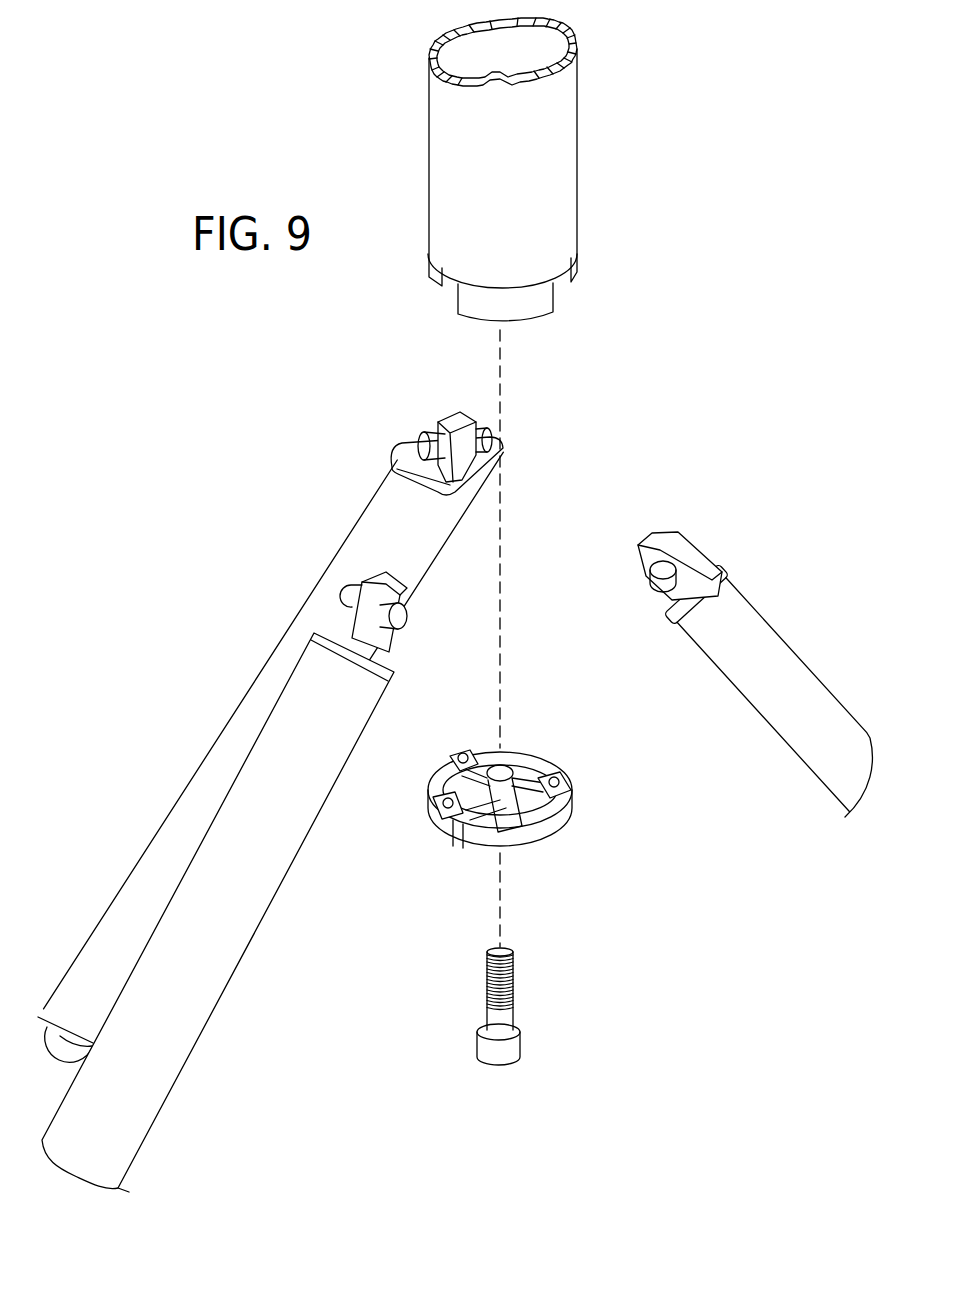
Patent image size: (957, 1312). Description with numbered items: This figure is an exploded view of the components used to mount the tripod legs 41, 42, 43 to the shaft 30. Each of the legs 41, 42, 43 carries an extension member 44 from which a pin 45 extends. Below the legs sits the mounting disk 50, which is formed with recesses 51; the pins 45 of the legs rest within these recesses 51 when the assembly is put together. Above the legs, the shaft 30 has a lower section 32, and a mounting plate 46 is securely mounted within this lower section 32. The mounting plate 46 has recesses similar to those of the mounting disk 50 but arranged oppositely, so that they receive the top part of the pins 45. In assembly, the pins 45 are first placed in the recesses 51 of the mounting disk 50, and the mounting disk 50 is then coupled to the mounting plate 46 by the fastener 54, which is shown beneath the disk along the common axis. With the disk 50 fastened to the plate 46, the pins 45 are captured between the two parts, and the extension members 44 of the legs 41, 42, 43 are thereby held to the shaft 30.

The shaft 30 is at (577, 175).
The lower section 32 is at (557, 193).
The mounting plate 46 is at (547, 300).
The tripod leg 41 is at (232, 944).
The tripod leg 42 is at (780, 665).
The tripod leg 43 is at (362, 525).
The extension member 44 is at (457, 425).
The pin 45 is at (435, 443).
The mounting disk 50 is at (532, 791).
The recess 51 is at (462, 760).
The fastener 54 is at (513, 990).